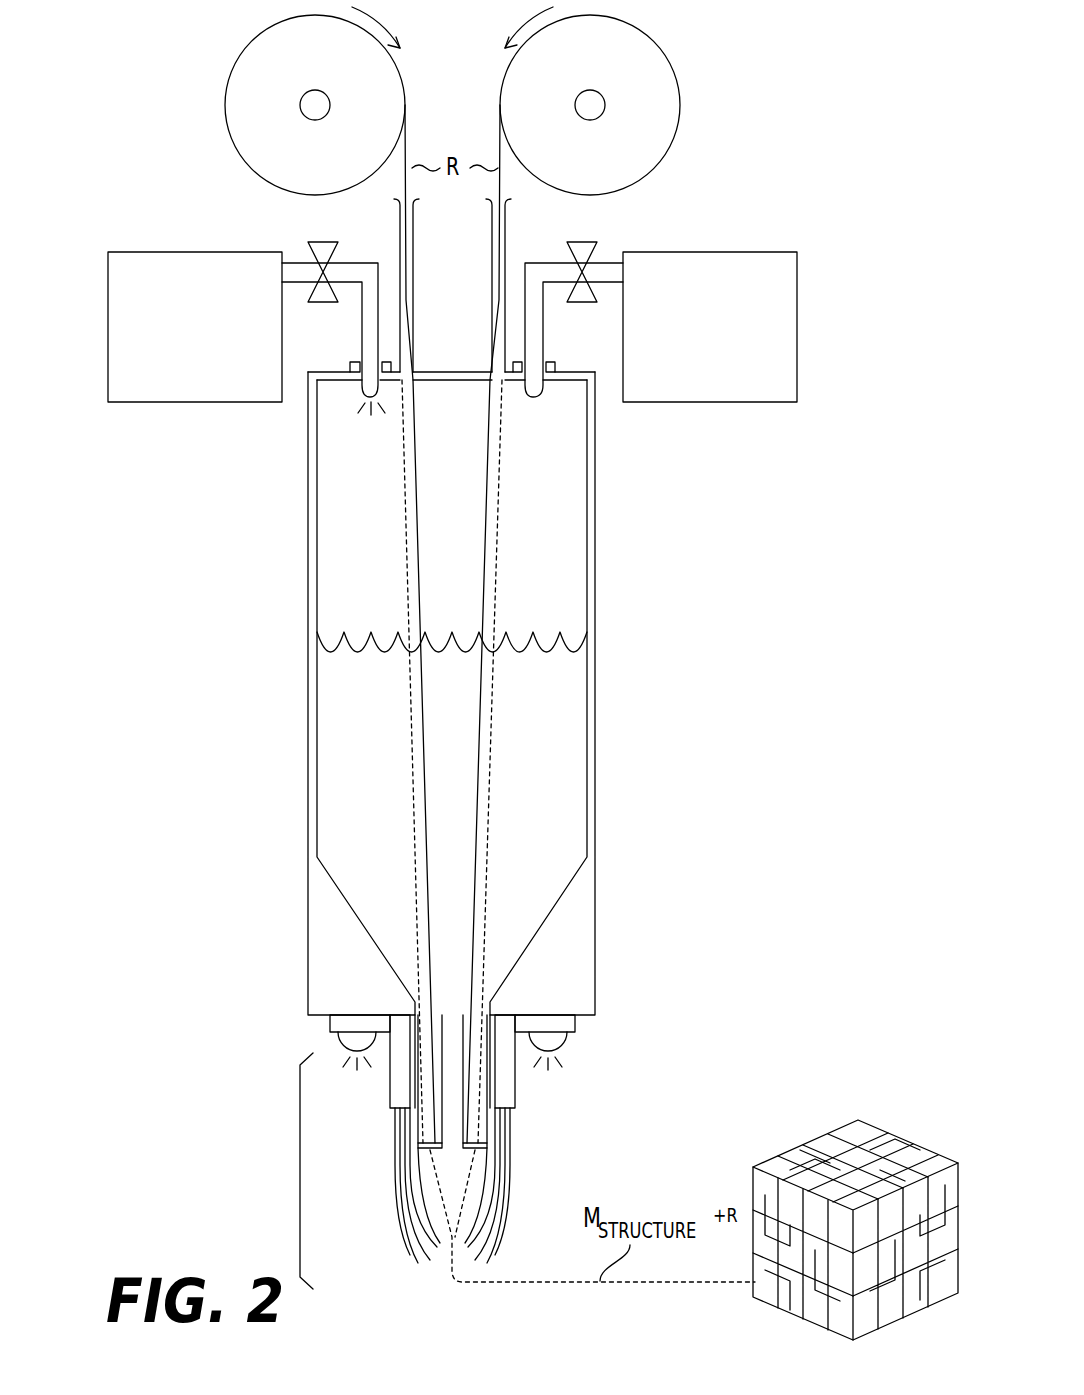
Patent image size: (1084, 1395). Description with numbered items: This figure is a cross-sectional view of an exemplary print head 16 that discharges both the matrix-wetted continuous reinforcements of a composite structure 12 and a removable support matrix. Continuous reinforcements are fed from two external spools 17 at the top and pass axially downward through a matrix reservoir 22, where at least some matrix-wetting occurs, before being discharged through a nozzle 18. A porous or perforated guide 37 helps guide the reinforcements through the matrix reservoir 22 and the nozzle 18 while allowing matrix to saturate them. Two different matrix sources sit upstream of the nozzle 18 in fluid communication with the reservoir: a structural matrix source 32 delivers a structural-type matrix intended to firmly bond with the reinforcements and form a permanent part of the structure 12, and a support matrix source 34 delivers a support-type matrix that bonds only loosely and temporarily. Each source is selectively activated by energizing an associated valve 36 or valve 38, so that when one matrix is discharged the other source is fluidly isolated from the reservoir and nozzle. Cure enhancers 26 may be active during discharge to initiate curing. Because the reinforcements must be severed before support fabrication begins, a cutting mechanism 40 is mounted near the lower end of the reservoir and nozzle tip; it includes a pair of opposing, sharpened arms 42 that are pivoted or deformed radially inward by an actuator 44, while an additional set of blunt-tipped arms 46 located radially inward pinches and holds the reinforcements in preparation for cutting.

The composite structure 12 is at (855, 1120).
The head 16 is at (148, 984).
The external spool 17 is at (328, 168).
The nozzle 18 is at (500, 1072).
The matrix reservoir 22 is at (578, 568).
The cure enhancer 26 is at (320, 1044).
The structural matrix source 32 is at (208, 358).
The support matrix source 34 is at (725, 358).
The valve 36 is at (338, 247).
The perforated guide 37 is at (408, 562).
The valve 38 is at (598, 249).
The cutting mechanism 40 is at (300, 1167).
The opposing arms 42 is at (507, 1203).
The actuator 44 is at (395, 1090).
The additional set of arms 46 is at (503, 1182).